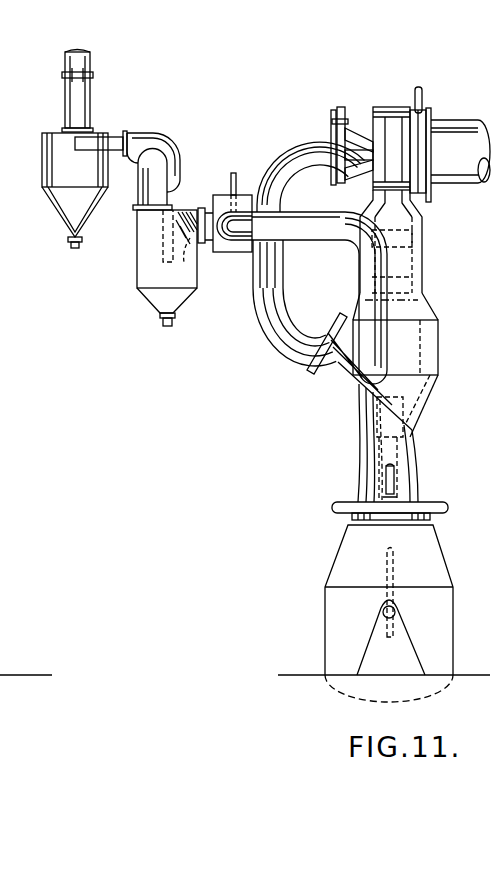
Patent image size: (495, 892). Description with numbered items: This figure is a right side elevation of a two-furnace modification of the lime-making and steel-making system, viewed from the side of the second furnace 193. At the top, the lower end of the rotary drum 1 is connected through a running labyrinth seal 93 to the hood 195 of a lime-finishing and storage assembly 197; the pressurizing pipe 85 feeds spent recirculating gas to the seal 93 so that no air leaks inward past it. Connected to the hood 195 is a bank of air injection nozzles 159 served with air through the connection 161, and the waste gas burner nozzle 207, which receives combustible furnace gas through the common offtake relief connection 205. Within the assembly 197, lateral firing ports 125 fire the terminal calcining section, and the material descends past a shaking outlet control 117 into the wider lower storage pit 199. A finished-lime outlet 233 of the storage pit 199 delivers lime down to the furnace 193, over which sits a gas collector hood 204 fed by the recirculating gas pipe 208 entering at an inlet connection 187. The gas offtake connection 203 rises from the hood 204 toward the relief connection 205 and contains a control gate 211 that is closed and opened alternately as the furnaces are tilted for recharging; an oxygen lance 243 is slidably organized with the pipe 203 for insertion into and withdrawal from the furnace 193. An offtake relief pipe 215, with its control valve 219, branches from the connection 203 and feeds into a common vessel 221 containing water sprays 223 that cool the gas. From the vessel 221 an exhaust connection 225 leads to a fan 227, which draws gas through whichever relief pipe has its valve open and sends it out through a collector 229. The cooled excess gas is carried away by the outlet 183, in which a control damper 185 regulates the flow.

The drum 1 is at (475, 115).
The pipe 85 is at (422, 98).
The running labyrinth seal 93 is at (419, 199).
The shaking outlet control 117 is at (433, 311).
The lateral ports 125 is at (414, 241).
The air injection nozzles 159 is at (345, 137).
The connection 161 is at (336, 112).
The outlet 183 is at (76, 107).
The control damper 185 is at (78, 72).
The inlet connection 187 is at (340, 514).
The furnace 193 is at (330, 627).
The hood 195 is at (396, 105).
The lime-finishing and storage assembly 197 is at (433, 266).
The storage pit 199 is at (420, 358).
The gas offtake connection 203 is at (283, 333).
The gas collector hood 204 is at (362, 495).
The common offtake relief connection 205 is at (292, 165).
The waste gas burner nozzle 207 is at (364, 148).
The recirculating gas pipe 208 is at (385, 470).
The control gate 211 is at (306, 368).
The offtake relief pipe 215 is at (350, 272).
The control valve 219 is at (243, 205).
The common vessel 221 is at (150, 272).
The water sprays 223 is at (182, 262).
The exhaust connection 225 is at (145, 193).
The fan 227 is at (140, 137).
The collector 229 is at (55, 178).
The finished-lime outlet 233 is at (375, 446).
The oxygen lance 243 is at (385, 580).